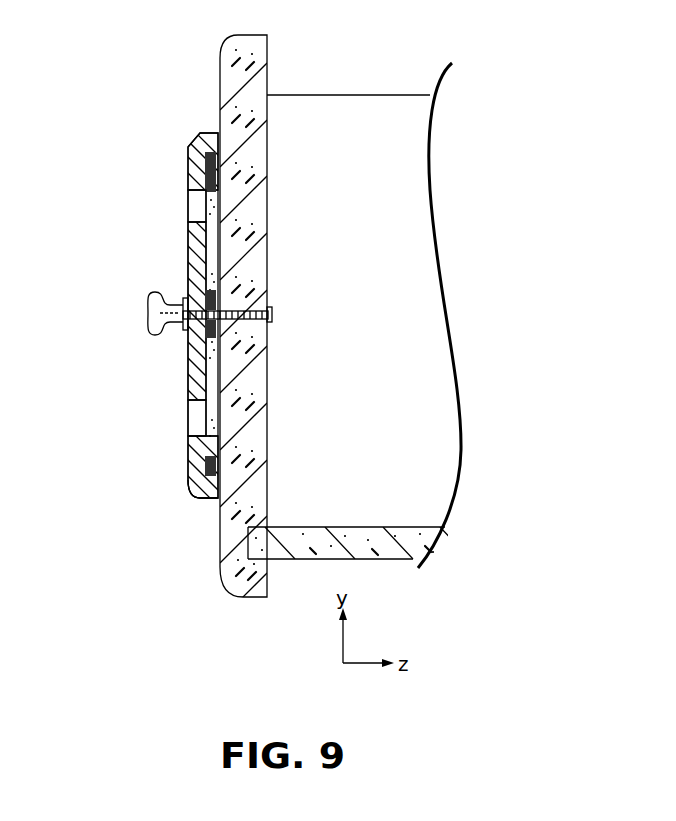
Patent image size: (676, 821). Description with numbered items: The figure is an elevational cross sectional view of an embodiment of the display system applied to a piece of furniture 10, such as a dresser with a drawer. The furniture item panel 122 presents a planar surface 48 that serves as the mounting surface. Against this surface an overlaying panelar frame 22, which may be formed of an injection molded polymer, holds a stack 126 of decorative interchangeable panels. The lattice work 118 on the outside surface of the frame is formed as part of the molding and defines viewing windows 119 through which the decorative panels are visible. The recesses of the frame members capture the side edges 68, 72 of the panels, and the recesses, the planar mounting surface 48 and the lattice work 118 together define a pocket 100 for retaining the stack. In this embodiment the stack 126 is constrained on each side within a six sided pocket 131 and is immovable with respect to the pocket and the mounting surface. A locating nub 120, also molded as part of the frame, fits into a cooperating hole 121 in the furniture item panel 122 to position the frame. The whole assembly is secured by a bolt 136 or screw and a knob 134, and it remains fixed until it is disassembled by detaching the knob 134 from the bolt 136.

The piece of furniture 10 is at (295, 93).
The furniture item panel 122 is at (255, 203).
The planar surface 48 is at (218, 543).
The overlaying panelar frame 22 is at (188, 443).
The stack of decorative panels 126 is at (189, 177).
The side edge 68 is at (214, 152).
The lattice work 118 is at (187, 382).
The viewing windows 119 is at (193, 202).
The pocket 100 is at (188, 457).
The side edge 72 is at (210, 499).
The locating nub 120 is at (219, 303).
The cooperating hole 121 is at (223, 320).
The bolt 136 is at (273, 313).
The knob 134 is at (148, 317).
The six sided pocket 131 is at (212, 415).